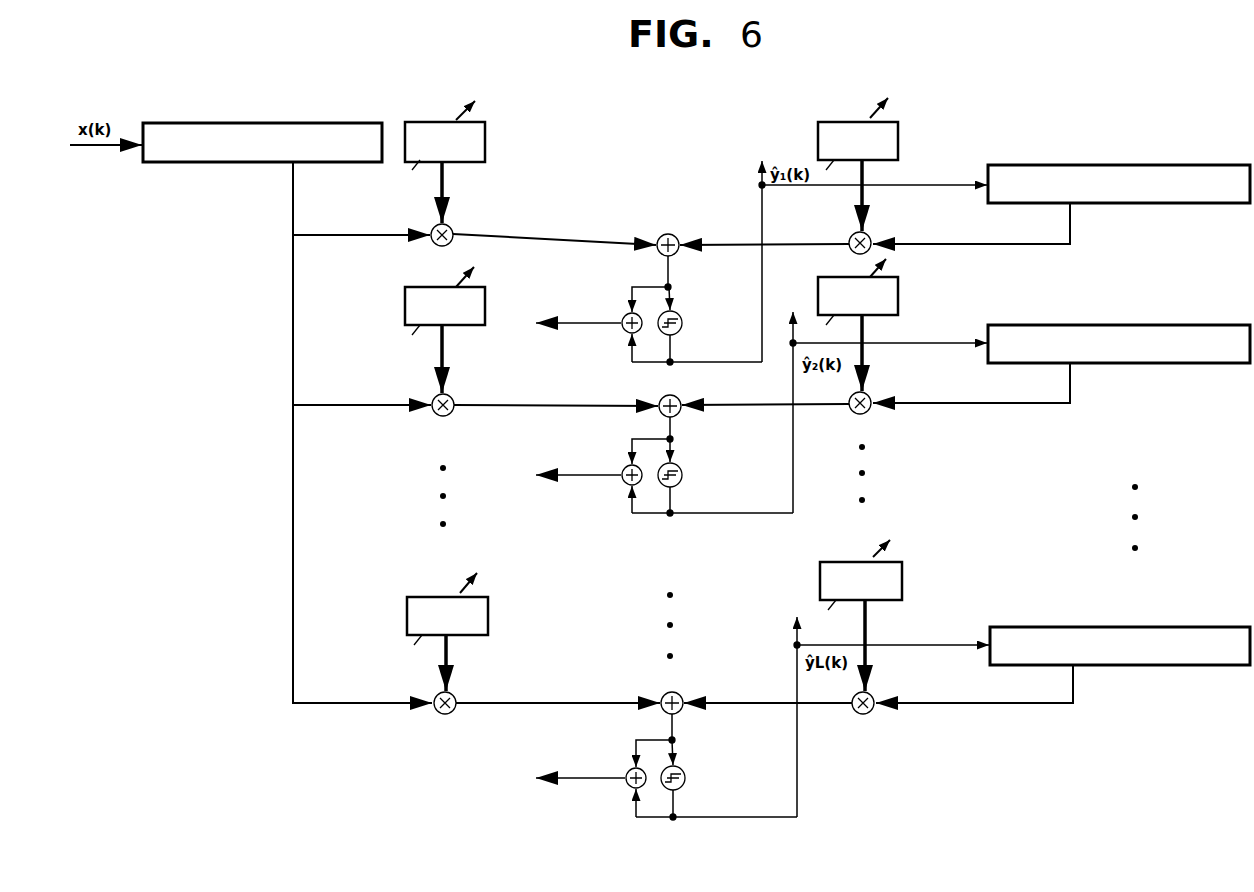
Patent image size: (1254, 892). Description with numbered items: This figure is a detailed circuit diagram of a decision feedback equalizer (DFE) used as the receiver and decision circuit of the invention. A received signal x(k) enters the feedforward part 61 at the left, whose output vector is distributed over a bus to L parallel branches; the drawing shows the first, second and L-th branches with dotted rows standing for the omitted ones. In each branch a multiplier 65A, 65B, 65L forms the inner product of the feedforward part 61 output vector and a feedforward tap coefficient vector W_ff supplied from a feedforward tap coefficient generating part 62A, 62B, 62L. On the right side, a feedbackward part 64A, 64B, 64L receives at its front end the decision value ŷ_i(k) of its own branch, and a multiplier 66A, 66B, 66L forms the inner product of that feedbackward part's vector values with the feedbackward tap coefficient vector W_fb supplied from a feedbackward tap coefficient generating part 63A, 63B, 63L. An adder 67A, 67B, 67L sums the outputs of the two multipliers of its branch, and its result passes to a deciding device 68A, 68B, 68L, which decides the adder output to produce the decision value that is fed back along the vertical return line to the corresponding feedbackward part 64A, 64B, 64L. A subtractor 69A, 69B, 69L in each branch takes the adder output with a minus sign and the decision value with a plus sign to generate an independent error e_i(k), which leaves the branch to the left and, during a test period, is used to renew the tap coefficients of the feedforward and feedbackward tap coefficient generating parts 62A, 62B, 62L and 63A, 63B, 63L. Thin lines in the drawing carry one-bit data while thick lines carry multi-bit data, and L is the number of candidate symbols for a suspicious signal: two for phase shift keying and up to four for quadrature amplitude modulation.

The feedforward part 61 is at (215, 164).
The feedforward tap coefficient generating part 62A is at (405, 140).
The feedforward tap coefficient generating part 62B is at (405, 305).
The feedforward tap coefficient generating part 62L is at (415, 597).
The feedbackward tap coefficient generating part 63A is at (898, 140).
The feedbackward tap coefficient generating part 63B is at (898, 292).
The feedbackward tap coefficient generating part 63L is at (902, 580).
The feedbackward part 64A is at (1133, 203).
The feedbackward part 64B is at (1133, 363).
The feedbackward part 64L is at (1133, 665).
The multiplier 65A is at (432, 247).
The multiplier 65B is at (440, 418).
The multiplier 65L is at (436, 695).
The multiplier 66A is at (872, 236).
The multiplier 66B is at (869, 395).
The multiplier 66L is at (868, 712).
The adder 67A is at (678, 237).
The adder 67B is at (680, 396).
The adder 67L is at (680, 694).
The deciding device 68A is at (683, 323).
The deciding device 68B is at (684, 478).
The deciding device 68L is at (686, 780).
The subtractor 69A is at (625, 340).
The subtractor 69B is at (642, 486).
The subtractor 69L is at (645, 790).